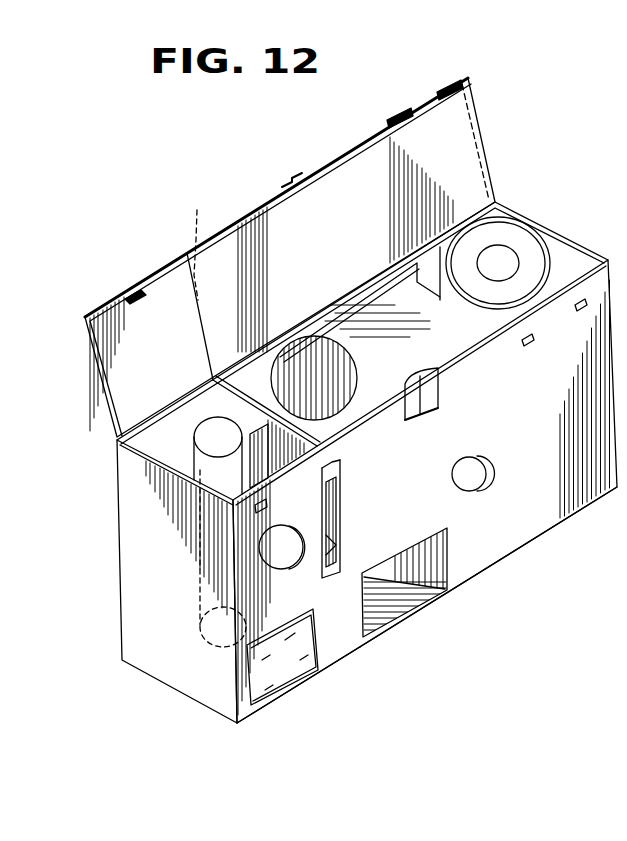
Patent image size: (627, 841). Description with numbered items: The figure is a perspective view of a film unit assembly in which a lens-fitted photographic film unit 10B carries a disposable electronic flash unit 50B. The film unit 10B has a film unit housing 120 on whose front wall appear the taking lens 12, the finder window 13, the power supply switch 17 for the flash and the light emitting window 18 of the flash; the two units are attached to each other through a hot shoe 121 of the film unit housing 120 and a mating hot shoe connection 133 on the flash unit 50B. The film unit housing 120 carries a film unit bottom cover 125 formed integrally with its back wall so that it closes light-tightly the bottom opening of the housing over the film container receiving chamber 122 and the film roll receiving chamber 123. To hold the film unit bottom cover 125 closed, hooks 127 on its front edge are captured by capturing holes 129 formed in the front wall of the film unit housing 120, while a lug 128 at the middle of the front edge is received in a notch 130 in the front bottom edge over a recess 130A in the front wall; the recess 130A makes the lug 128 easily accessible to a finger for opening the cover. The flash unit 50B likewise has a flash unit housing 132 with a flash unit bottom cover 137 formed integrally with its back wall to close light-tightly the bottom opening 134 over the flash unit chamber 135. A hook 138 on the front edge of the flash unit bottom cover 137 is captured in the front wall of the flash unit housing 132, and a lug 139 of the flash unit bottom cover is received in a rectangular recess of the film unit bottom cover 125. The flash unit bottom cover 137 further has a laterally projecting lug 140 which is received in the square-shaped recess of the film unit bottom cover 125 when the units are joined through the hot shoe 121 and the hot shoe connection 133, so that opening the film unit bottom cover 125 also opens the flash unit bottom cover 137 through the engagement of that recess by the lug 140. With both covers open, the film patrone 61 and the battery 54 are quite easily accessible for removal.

The film unit 10B is at (481, 577).
The taking lens 12 is at (488, 482).
The finder window 13 is at (405, 612).
The power supply switch 17 is at (281, 552).
The light emitting window 18 is at (264, 672).
The electronic flash unit 50B is at (306, 694).
The battery 54 is at (197, 452).
The film patrone 61 is at (522, 243).
The film unit housing 120 is at (517, 532).
The hot shoe 121 is at (338, 516).
The film container receiving chamber 122 is at (413, 260).
The film roll receiving chamber 123 is at (340, 418).
The film unit bottom cover 125 is at (465, 142).
The hooks 127 is at (400, 116).
The lug 128 is at (286, 183).
The capturing holes 129 is at (580, 312).
The notch 130 is at (442, 390).
The recess 130A is at (425, 422).
The flash unit housing 132 is at (133, 604).
The hot shoe connection 133 is at (342, 538).
The bottom opening 134 is at (190, 455).
The hidden battery outline 135 is at (150, 437).
The flash unit bottom cover 137 is at (135, 357).
The hook 138 is at (136, 290).
The lug 139 is at (267, 505).
The laterally projecting lug 140 is at (199, 244).